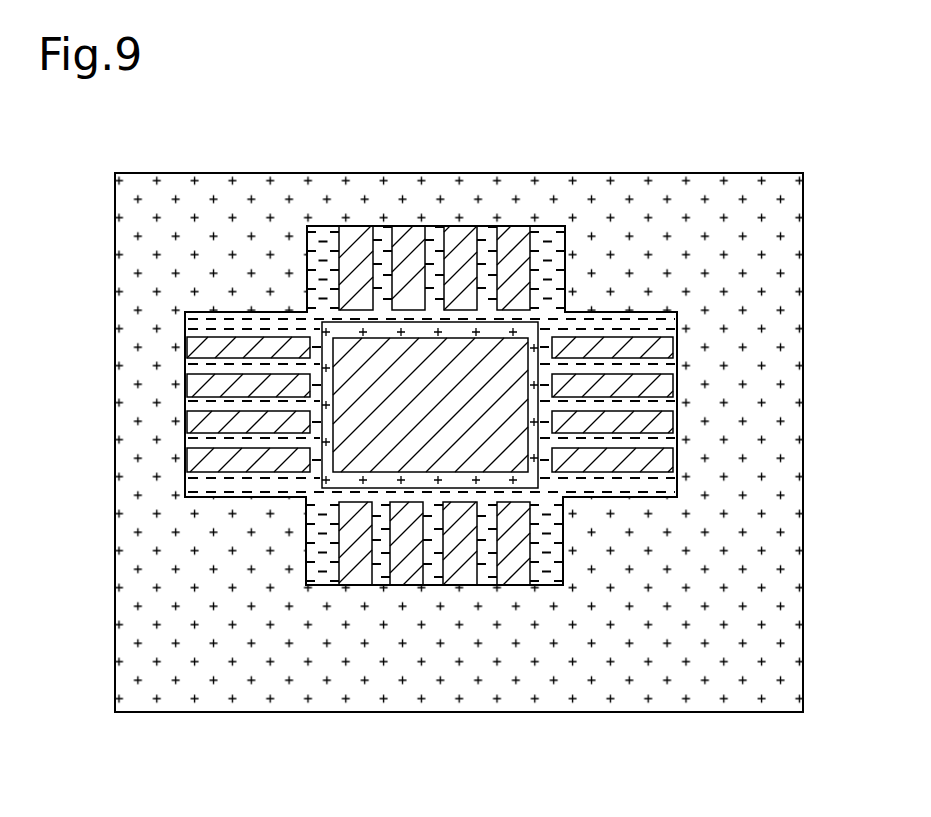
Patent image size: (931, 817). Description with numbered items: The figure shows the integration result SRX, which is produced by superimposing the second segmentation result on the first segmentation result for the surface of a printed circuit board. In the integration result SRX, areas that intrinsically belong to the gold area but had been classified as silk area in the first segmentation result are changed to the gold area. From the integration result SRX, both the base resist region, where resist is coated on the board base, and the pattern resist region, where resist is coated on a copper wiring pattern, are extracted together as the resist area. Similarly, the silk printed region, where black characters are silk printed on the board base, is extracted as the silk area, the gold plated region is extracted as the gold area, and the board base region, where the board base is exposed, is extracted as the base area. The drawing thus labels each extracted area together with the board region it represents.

The integration result SRX is at (752, 173).